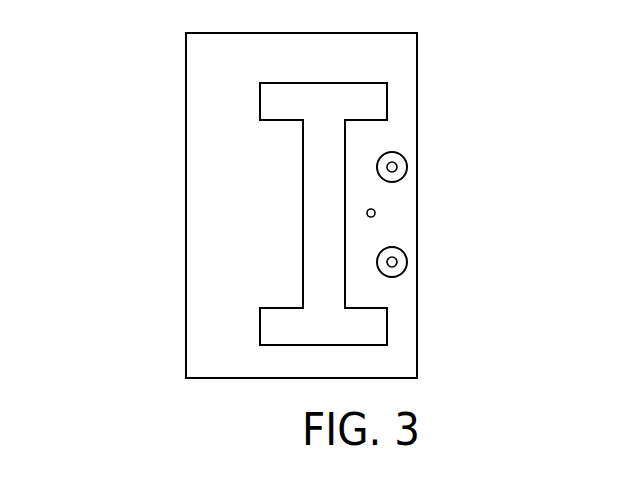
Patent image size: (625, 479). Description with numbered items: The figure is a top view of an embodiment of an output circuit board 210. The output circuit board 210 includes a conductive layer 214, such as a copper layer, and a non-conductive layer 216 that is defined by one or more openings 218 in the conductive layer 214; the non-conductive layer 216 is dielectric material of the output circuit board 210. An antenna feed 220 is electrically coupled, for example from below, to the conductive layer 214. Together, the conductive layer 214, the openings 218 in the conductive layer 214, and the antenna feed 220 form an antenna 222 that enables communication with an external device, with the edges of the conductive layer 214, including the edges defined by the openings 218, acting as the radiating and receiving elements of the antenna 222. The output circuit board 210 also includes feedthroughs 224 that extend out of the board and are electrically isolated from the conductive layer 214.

The output circuit board 210 is at (151, 46).
The conductive layer 214 is at (231, 64).
The non-conductive layer 216 is at (341, 111).
The openings 218 is at (291, 247).
The antenna feed 220 is at (371, 213).
The antenna 222 is at (173, 300).
The feedthroughs 224 is at (392, 167).